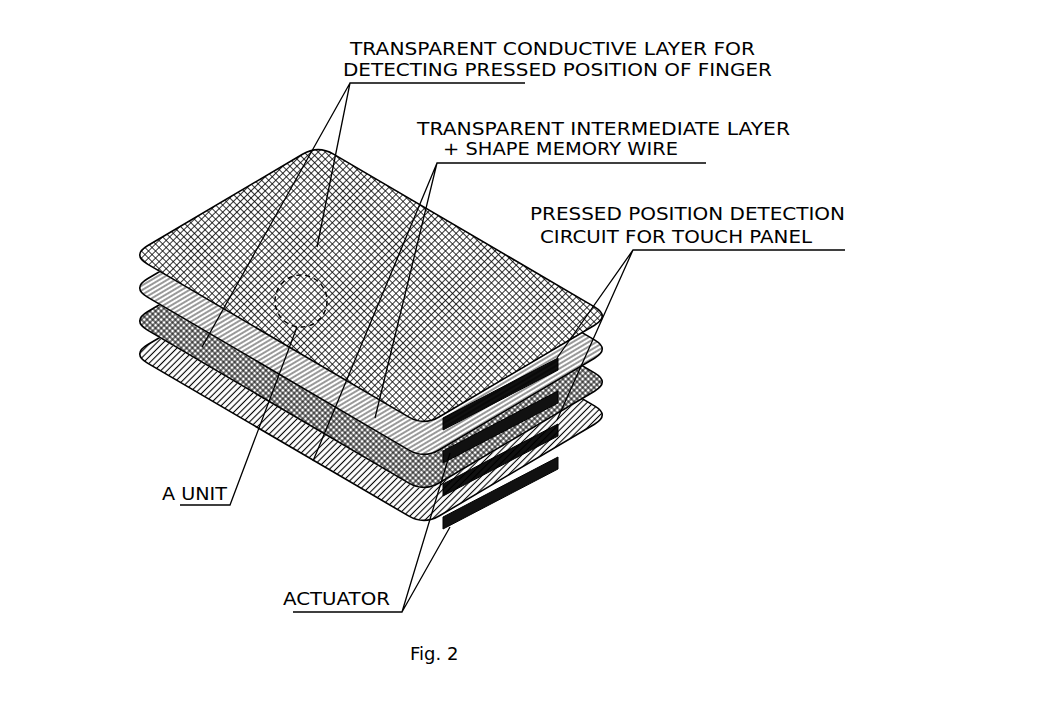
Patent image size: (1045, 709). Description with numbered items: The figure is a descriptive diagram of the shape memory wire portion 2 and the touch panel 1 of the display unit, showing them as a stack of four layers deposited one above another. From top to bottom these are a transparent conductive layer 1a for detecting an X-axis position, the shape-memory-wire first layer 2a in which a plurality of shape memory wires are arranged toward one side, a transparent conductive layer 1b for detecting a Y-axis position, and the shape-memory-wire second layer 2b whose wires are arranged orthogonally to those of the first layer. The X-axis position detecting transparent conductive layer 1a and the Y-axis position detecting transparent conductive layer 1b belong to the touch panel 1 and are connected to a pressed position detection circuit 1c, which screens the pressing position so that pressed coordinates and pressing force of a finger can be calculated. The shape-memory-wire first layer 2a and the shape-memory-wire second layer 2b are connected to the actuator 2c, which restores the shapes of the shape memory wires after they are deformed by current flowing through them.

The touch panel 1 is at (438, 325).
The transparent conductive layer for detecting an X-axis position 1a is at (612, 315).
The transparent conductive layer for detecting a Y-axis position 1b is at (612, 380).
The pressed position detection circuit 1c is at (535, 468).
The shape memory wire portion 2 is at (304, 371).
The shape-memory-wire first layer 2a is at (131, 288).
The shape-memory-wire second layer 2b is at (131, 356).
The actuator 2c is at (492, 510).